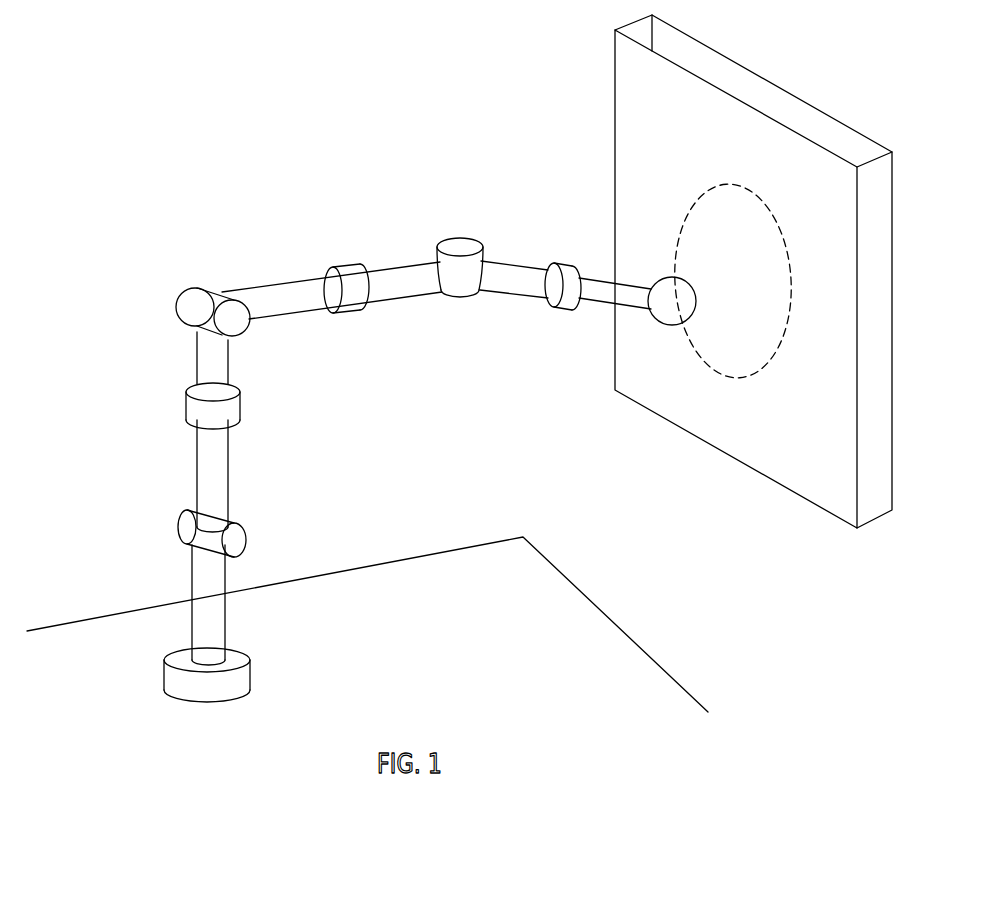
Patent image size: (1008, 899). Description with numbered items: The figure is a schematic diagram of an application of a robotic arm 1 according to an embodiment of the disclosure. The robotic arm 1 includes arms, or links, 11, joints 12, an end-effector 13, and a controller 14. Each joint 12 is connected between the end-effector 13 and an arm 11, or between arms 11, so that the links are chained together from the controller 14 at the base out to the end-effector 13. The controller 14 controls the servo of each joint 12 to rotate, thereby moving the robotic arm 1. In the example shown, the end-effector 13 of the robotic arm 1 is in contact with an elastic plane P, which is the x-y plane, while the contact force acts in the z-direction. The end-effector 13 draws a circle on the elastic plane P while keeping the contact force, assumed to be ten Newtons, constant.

The robotic arm 1 is at (345, 247).
The arm 11 is at (270, 297).
The joint 12 is at (195, 305).
The end-effector 13 is at (663, 307).
The controller 14 is at (227, 685).
The elastic plane P is at (663, 160).